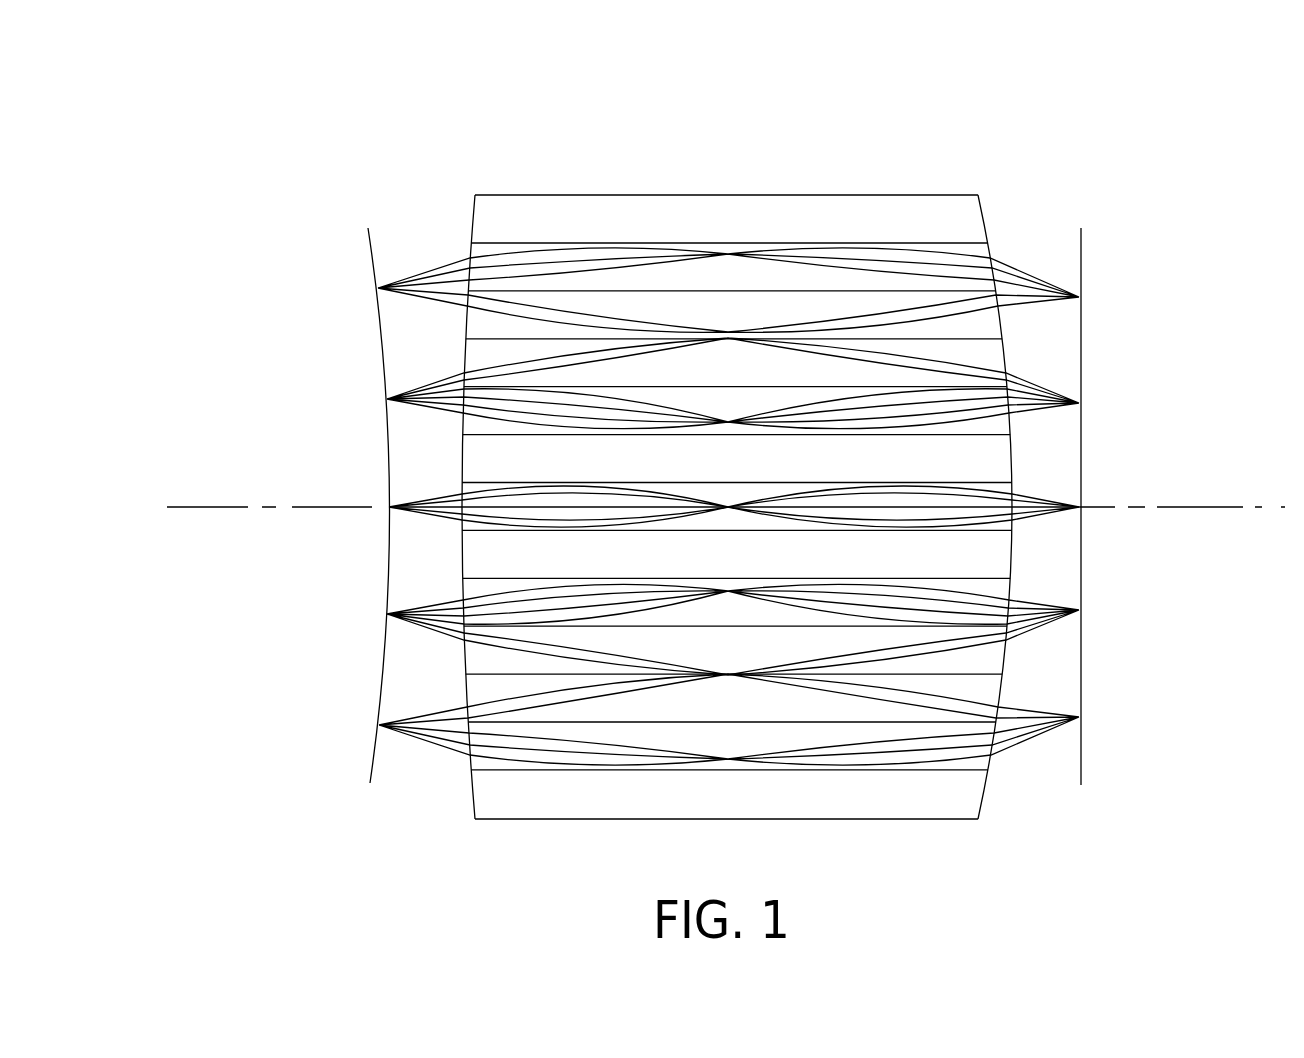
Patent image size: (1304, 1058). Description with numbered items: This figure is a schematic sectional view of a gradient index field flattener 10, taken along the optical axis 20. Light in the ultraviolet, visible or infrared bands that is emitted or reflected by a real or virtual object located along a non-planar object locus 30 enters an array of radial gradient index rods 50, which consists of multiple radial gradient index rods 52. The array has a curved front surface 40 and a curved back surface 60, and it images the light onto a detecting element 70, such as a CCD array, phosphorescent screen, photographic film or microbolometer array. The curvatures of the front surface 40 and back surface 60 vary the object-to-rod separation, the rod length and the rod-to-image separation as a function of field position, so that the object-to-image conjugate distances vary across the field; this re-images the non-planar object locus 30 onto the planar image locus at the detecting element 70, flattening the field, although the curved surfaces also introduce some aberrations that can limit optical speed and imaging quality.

The gradient index field flattener 10 is at (256, 109).
The optical axis 20 is at (192, 507).
The non-planar object locus 30 is at (369, 250).
The curved front surface 40 is at (472, 220).
The array of radial gradient index rods 50 is at (652, 194).
The radial gradient index rod 52 is at (820, 220).
The curved back surface 60 is at (987, 218).
The detecting element 70 is at (1098, 250).